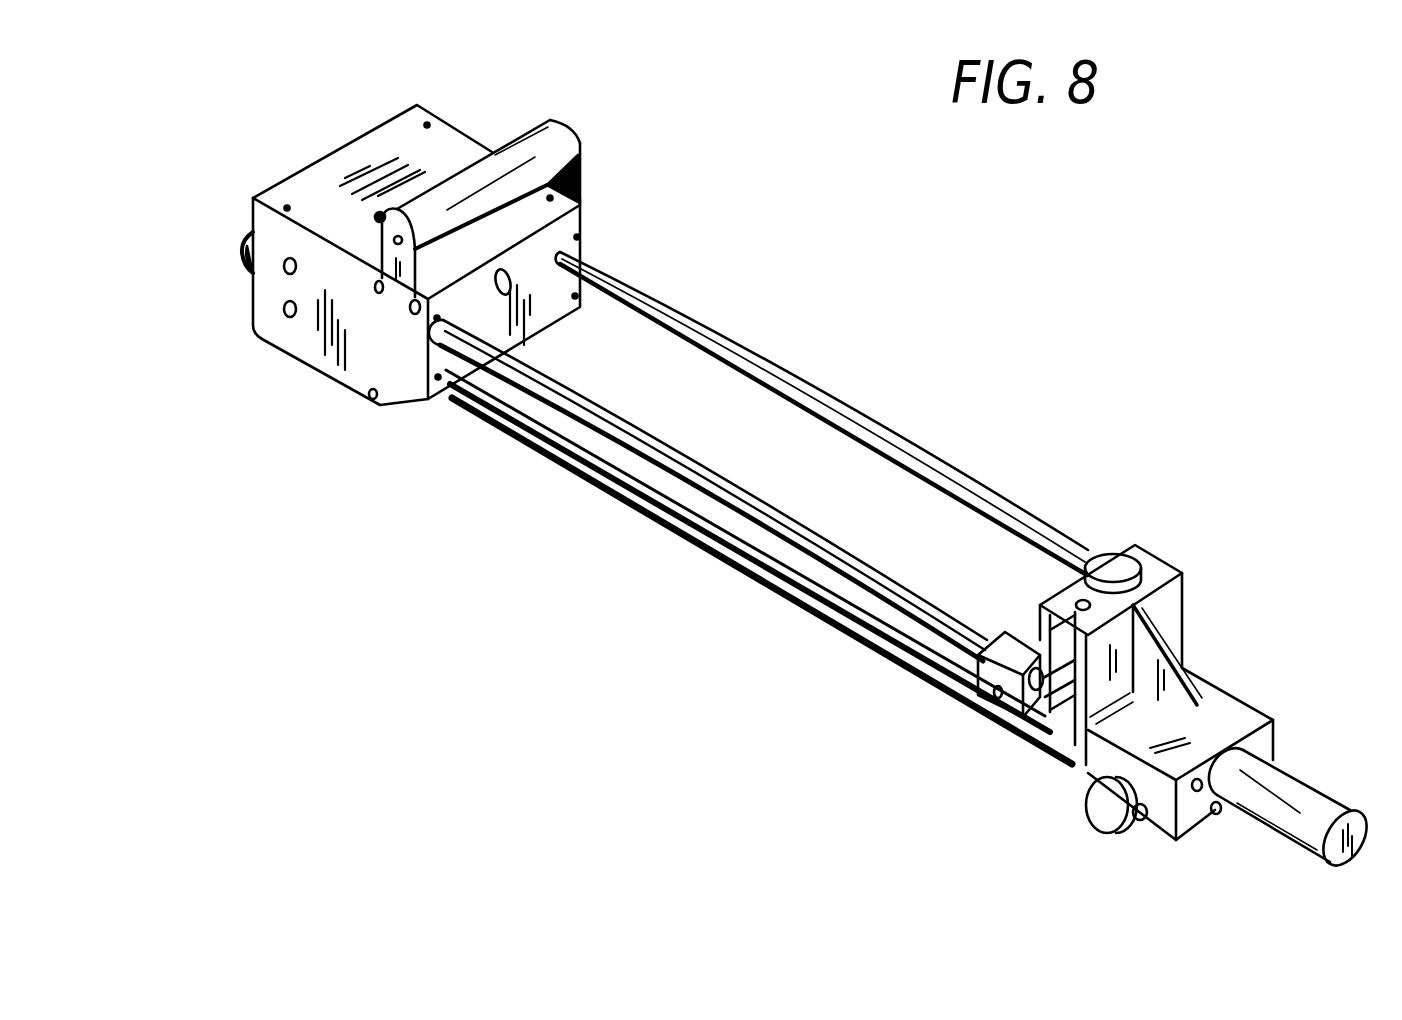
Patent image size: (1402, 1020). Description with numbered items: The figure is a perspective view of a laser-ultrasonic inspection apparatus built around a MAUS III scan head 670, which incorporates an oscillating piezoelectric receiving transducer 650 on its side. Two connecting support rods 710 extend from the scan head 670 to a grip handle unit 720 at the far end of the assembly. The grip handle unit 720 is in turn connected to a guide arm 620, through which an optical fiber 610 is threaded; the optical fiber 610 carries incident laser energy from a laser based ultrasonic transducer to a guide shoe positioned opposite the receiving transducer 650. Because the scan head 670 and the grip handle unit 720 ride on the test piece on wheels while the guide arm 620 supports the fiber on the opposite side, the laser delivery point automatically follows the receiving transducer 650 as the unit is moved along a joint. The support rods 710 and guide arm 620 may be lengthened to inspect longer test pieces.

The optical fiber 610 is at (813, 605).
The guide arm 620 is at (697, 530).
The piezoelectric receiving transducer 650 is at (250, 240).
The MAUS III scan head 670 is at (407, 128).
The connecting support rod 710 is at (744, 502).
The grip handle unit 720 is at (1218, 630).